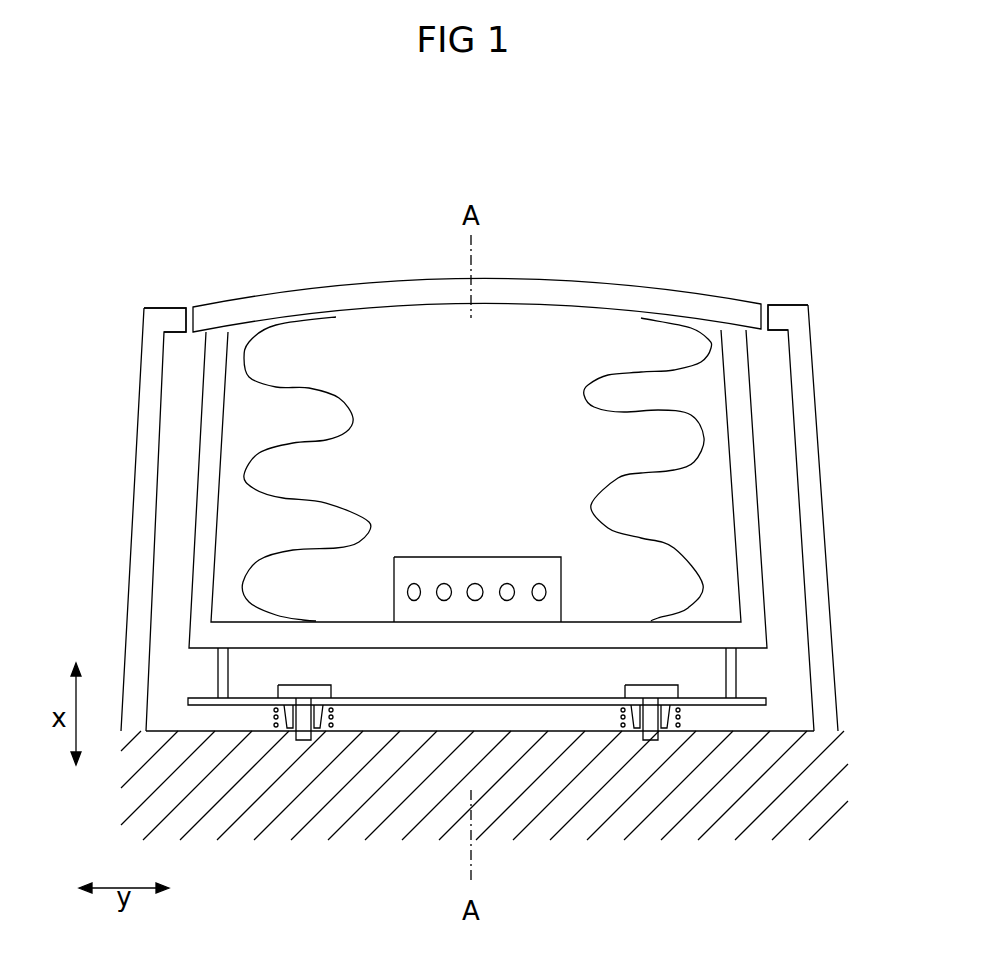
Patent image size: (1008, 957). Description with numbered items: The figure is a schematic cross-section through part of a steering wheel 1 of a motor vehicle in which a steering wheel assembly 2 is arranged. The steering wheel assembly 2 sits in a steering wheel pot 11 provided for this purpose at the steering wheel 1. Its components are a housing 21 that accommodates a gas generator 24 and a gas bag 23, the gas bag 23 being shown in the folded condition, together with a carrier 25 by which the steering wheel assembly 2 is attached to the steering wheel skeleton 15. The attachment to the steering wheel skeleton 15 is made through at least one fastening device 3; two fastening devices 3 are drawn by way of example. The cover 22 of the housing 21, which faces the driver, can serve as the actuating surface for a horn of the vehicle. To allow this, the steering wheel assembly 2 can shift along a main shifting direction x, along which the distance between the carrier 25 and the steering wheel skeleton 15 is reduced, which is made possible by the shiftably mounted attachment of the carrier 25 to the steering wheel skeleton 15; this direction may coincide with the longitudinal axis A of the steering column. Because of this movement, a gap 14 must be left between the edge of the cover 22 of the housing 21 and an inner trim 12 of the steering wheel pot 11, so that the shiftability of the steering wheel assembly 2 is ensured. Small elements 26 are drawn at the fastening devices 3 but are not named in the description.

The steering wheel 1 is at (110, 350).
The steering wheel assembly 2 is at (313, 252).
The fastening device 3 is at (288, 742).
The steering wheel pot 11 is at (802, 415).
The inner trim 12 is at (768, 302).
The gap 14 is at (188, 307).
The steering wheel skeleton 15 is at (798, 807).
The housing 21 is at (207, 515).
The cover 22 is at (633, 293).
The gas bag 23 is at (293, 443).
The gas generator 24 is at (470, 570).
The carrier 25 is at (702, 701).
The spring 26 is at (678, 730).